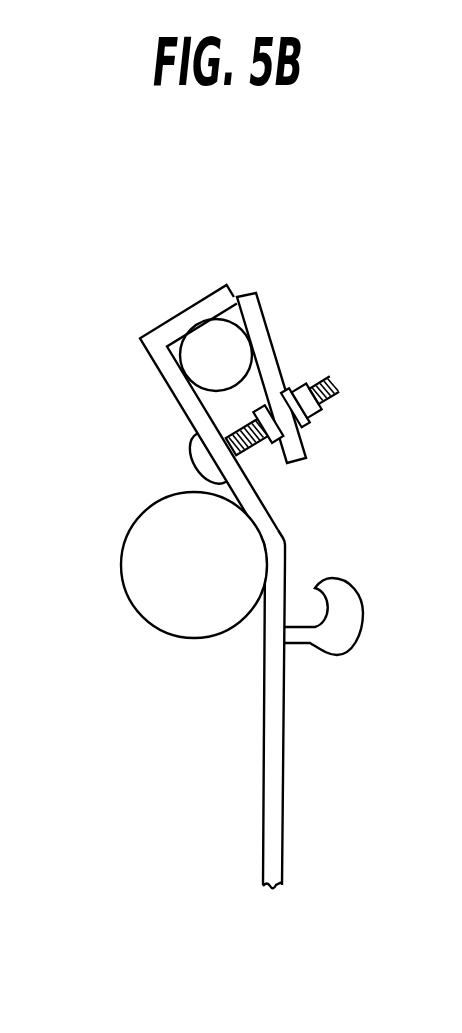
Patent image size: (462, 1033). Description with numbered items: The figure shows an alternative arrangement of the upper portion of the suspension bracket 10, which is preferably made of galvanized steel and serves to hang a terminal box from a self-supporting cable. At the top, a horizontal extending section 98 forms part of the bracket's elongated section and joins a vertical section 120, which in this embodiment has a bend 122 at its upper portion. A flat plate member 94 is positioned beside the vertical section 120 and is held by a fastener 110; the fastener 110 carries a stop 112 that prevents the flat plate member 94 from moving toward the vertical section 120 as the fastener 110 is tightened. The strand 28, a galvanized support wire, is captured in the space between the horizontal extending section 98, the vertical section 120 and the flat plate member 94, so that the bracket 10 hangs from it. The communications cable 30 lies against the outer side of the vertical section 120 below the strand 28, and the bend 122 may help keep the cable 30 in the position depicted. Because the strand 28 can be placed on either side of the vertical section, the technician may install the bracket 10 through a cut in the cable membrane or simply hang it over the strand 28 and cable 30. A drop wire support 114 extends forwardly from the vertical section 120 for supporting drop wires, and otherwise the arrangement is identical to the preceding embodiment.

The suspension bracket 10 is at (303, 828).
The strand 28 is at (237, 343).
The communications cable 30 is at (160, 622).
The flat plate member 94 is at (276, 357).
The horizontal extending section 98 is at (157, 338).
The fastener 110 is at (337, 397).
The stop 112 is at (272, 434).
The drop wire support 114 is at (343, 635).
The vertical section 120 is at (277, 789).
The bend 122 is at (285, 538).